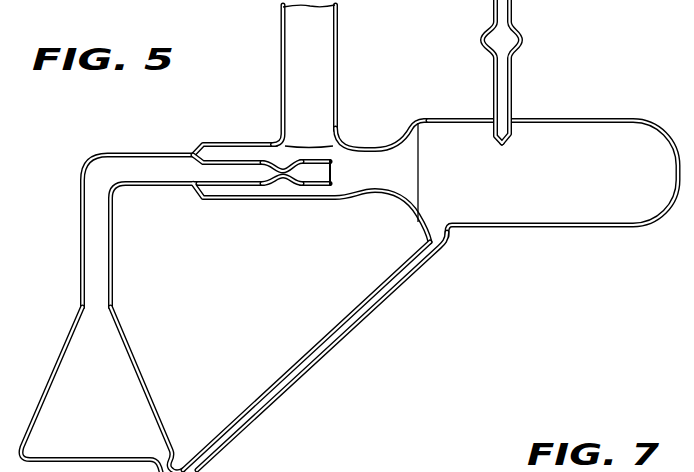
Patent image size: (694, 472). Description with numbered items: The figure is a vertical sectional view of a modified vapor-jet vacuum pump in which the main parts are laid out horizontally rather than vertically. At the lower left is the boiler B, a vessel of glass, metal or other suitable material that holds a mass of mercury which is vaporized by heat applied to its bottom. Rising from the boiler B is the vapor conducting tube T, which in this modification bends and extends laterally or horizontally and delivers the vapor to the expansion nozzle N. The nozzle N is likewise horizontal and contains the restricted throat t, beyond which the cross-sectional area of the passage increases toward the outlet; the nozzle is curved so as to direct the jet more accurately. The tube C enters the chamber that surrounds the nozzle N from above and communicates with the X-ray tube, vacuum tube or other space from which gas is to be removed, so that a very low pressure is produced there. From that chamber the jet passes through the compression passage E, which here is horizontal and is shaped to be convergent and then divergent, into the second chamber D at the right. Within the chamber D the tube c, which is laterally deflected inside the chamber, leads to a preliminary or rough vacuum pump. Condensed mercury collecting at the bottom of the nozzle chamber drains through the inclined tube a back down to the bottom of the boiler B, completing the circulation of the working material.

The tube C is at (282, 45).
The compression passage E is at (368, 147).
The second chamber D is at (566, 122).
The tube c is at (512, 67).
The vapor conducting tube T is at (162, 172).
The restricted throat t is at (272, 171).
The expansion nozzle N is at (321, 186).
The boiler B is at (49, 375).
The tube a is at (349, 330).